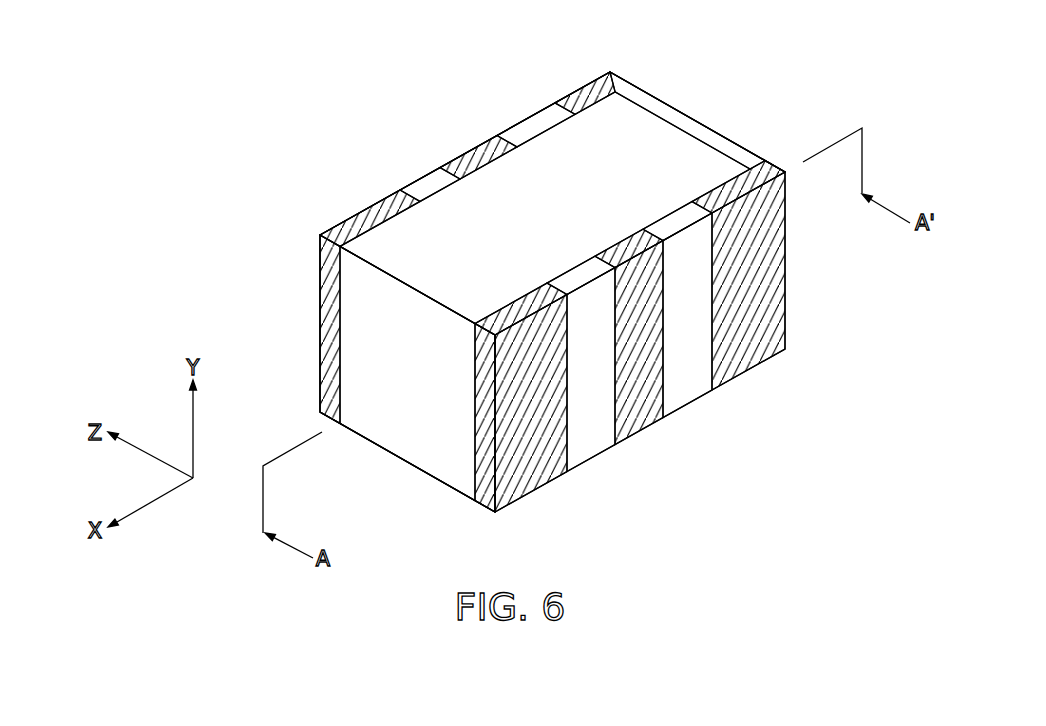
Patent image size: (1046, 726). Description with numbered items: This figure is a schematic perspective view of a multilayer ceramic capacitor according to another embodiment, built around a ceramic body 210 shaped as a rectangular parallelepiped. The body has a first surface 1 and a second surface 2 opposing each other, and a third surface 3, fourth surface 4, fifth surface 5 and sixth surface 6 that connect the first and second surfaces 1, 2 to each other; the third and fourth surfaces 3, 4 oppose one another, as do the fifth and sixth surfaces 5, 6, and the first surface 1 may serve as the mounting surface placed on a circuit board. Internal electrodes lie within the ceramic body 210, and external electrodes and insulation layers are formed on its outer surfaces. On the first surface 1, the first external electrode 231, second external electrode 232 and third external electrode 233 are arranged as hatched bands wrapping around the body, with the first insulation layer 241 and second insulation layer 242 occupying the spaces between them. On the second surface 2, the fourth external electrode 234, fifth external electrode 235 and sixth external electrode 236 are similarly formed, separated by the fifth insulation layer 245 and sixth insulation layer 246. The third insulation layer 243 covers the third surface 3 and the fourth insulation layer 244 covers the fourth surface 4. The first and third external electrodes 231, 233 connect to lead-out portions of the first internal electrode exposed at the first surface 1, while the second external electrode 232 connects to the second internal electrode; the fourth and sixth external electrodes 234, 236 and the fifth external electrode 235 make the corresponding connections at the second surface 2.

The first surface 1 is at (758, 372).
The second surface 2 is at (372, 192).
The third surface 3 is at (365, 340).
The fourth surface 4 is at (655, 141).
The fifth surface 5 is at (497, 178).
The sixth surface 6 is at (408, 438).
The ceramic body 210 is at (620, 127).
The first external electrode 231 is at (533, 484).
The second external electrode 232 is at (638, 422).
The third external electrode 233 is at (773, 285).
The fourth external electrode 234 is at (333, 224).
The fifth external electrode 235 is at (453, 165).
The sixth external electrode 236 is at (568, 98).
The first insulation layer 241 is at (588, 449).
The second insulation layer 242 is at (685, 395).
The third insulation layer 243 is at (352, 285).
The fourth insulation layer 244 is at (737, 150).
The fifth insulation layer 245 is at (400, 193).
The sixth insulation layer 246 is at (523, 125).